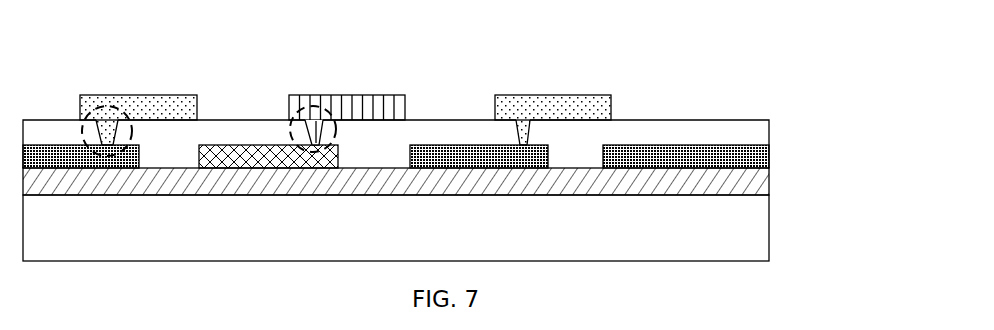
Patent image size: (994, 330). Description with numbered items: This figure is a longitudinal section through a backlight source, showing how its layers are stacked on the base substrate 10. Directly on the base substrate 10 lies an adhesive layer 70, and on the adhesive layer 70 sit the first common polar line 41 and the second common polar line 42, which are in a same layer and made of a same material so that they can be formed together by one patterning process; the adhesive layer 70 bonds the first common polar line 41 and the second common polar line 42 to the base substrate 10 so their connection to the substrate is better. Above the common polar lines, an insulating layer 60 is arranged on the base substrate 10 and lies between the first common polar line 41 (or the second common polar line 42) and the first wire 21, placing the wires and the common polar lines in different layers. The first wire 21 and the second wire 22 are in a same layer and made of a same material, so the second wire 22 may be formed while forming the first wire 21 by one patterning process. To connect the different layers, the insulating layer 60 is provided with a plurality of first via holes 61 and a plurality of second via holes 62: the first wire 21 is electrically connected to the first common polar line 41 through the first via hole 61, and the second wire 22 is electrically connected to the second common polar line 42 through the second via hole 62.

The base substrate 10 is at (747, 231).
The adhesive layer 70 is at (745, 178).
The insulating layer 60 is at (742, 132).
The first common polar line 41 is at (57, 145).
The second common polar line 42 is at (233, 145).
The first wire 21 is at (178, 105).
The second wire 22 is at (380, 110).
The first via hole 61 is at (115, 107).
The second via hole 62 is at (320, 110).